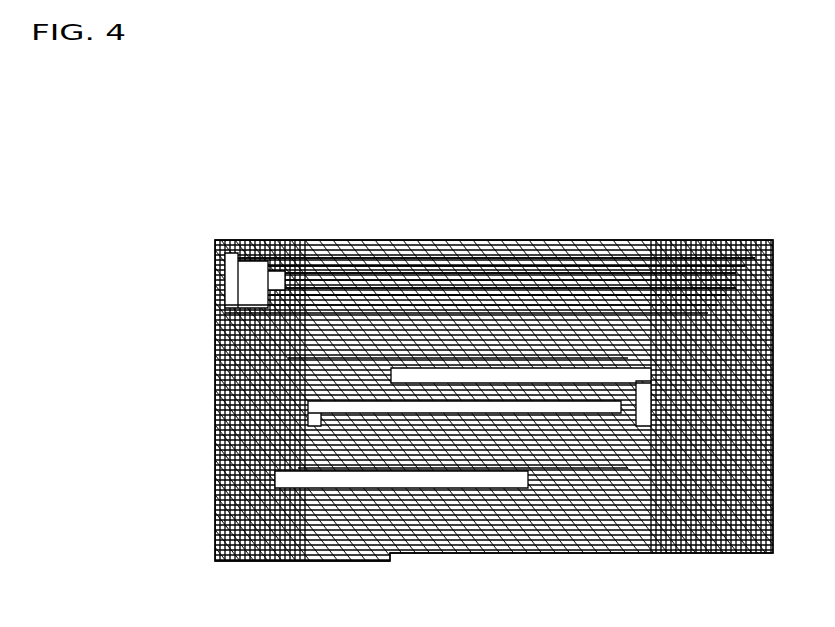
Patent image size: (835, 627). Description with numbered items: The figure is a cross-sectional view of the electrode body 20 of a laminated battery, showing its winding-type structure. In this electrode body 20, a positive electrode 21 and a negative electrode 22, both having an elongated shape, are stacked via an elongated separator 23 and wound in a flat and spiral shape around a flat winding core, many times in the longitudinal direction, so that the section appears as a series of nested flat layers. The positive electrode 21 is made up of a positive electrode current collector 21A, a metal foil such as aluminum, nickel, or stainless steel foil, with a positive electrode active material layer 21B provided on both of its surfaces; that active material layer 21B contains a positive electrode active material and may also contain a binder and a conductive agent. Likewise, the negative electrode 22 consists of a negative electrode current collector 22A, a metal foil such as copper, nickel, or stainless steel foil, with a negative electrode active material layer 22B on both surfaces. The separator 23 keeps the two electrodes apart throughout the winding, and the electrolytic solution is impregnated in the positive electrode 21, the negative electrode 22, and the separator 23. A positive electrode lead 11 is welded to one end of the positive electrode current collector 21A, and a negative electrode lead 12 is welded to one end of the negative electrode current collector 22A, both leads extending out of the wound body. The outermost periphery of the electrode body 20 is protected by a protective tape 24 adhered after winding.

The electrode body 20 is at (680, 125).
The positive electrode 21 is at (248, 173).
The positive electrode current collector 21A is at (280, 252).
The positive electrode active material layer 21B is at (352, 290).
The negative electrode 22 is at (507, 173).
The negative electrode current collector 22A is at (408, 250).
The negative electrode active material layer 22B is at (500, 290).
The separator 23 is at (637, 257).
The protective tape 24 is at (745, 232).
The positive electrode lead 11 is at (342, 352).
The negative electrode lead 12 is at (583, 462).